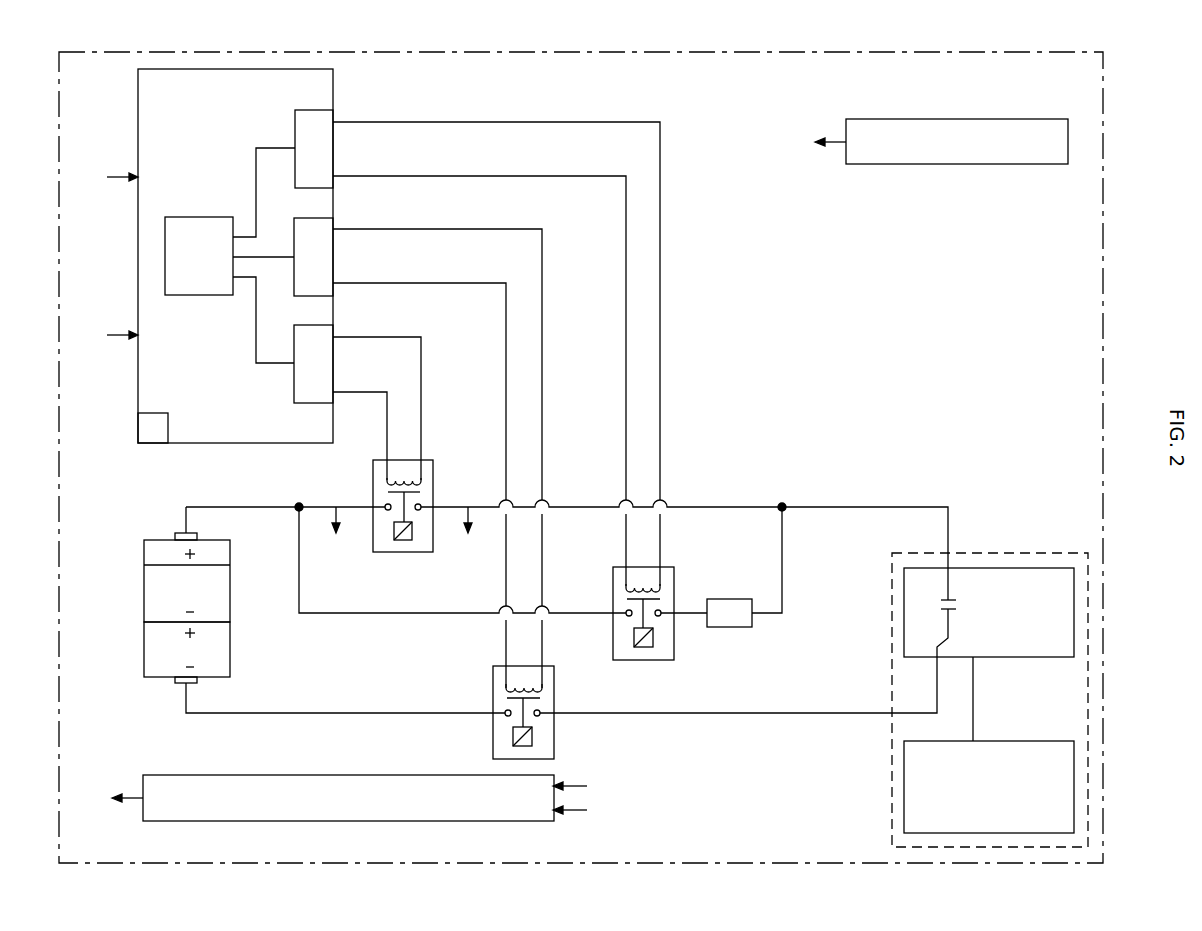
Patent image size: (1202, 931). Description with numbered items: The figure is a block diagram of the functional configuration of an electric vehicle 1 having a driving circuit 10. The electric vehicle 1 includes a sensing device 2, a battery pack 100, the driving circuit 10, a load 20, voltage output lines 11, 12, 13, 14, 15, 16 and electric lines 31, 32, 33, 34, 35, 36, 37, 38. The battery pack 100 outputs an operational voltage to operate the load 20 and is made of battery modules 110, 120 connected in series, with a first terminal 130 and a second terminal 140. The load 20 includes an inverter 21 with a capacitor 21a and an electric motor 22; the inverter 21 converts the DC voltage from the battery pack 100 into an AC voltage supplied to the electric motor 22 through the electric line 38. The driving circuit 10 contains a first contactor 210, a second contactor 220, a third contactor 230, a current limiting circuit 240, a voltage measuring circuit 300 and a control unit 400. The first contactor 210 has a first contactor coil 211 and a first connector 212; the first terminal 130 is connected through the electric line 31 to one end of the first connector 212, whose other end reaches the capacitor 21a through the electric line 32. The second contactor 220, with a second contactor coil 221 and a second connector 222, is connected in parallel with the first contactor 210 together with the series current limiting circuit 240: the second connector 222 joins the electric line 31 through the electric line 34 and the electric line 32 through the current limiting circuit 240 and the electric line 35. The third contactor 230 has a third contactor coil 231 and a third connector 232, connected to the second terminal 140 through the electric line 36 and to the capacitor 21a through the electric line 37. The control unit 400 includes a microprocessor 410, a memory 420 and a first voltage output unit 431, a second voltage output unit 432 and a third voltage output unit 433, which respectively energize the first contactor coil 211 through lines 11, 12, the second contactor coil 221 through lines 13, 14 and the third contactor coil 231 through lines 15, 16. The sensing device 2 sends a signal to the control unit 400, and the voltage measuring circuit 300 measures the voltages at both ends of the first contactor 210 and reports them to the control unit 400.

The electric vehicle 1 is at (1050, 37).
The sensing device 2 is at (964, 119).
The driving circuit 10 is at (847, 292).
The first voltage output line 11 is at (360, 392).
The second voltage output line 12 is at (360, 337).
The third voltage output line 13 is at (360, 176).
The fourth voltage output line 14 is at (360, 122).
The fifth voltage output line 15 is at (360, 283).
The sixth voltage output line 16 is at (360, 229).
The load 20 is at (990, 682).
The inverter 21 is at (989, 632).
The capacitor 21a is at (957, 613).
The electric motor 22 is at (1035, 741).
The electric line 31 is at (274, 506).
The electric line 32 is at (582, 506).
The electric line 33 is at (913, 506).
The electric line 34 is at (368, 612).
The electric line 35 is at (783, 580).
The electric line 36 is at (367, 712).
The electric line 37 is at (727, 712).
The electric line 38 is at (974, 700).
The battery pack 100 is at (199, 610).
The battery module 110 is at (144, 595).
The battery module 120 is at (144, 650).
The first terminal 130 is at (180, 533).
The second terminal 140 is at (182, 683).
The first contactor 210 is at (432, 492).
The first contactor coil 211 is at (405, 478).
The first connector 212 is at (424, 497).
The second contactor 220 is at (617, 601).
The second contactor coil 221 is at (641, 585).
The second connector 222 is at (626, 606).
The third contactor 230 is at (495, 698).
The third contactor coil 231 is at (522, 686).
The third connector 232 is at (506, 705).
The current limiting circuit 240 is at (729, 599).
The voltage measuring circuit 300 is at (281, 775).
The control unit 400 is at (138, 94).
The microprocessor 410 is at (198, 217).
The memory 420 is at (160, 413).
The first voltage output unit 431 is at (308, 315).
The second voltage output unit 432 is at (295, 127).
The third voltage output unit 433 is at (308, 208).